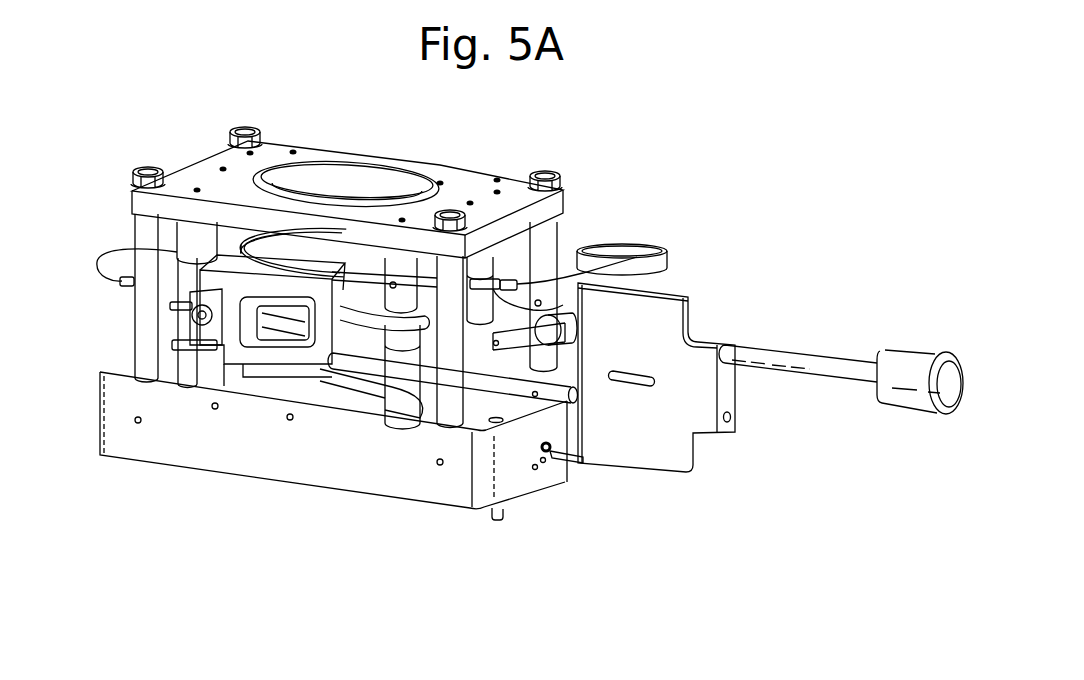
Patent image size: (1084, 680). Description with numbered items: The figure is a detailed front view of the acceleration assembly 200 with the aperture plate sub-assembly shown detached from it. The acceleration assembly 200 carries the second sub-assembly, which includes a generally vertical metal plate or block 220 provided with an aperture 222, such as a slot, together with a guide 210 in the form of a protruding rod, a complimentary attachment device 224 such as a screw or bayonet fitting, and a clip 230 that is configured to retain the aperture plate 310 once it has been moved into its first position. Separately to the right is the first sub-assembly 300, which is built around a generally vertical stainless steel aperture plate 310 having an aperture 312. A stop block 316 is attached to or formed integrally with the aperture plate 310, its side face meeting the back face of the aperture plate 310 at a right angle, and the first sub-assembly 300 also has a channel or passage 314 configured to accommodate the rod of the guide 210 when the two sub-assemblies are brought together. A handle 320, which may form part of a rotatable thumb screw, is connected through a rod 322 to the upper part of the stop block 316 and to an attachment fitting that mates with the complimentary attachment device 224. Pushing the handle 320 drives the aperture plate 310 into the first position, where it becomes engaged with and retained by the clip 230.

The acceleration assembly 200 is at (312, 505).
The guide 210 is at (517, 385).
The plate or block 220 is at (230, 348).
The aperture 222 is at (280, 320).
The complimentary attachment device 224 is at (339, 300).
The clip 230 is at (197, 337).
The first sub-assembly 300 is at (770, 388).
The aperture plate 310 is at (670, 313).
The aperture 312 is at (638, 382).
The channel or passage 314 is at (733, 420).
The stop block 316 is at (712, 342).
The handle 320 is at (912, 397).
The rod 322 is at (828, 363).